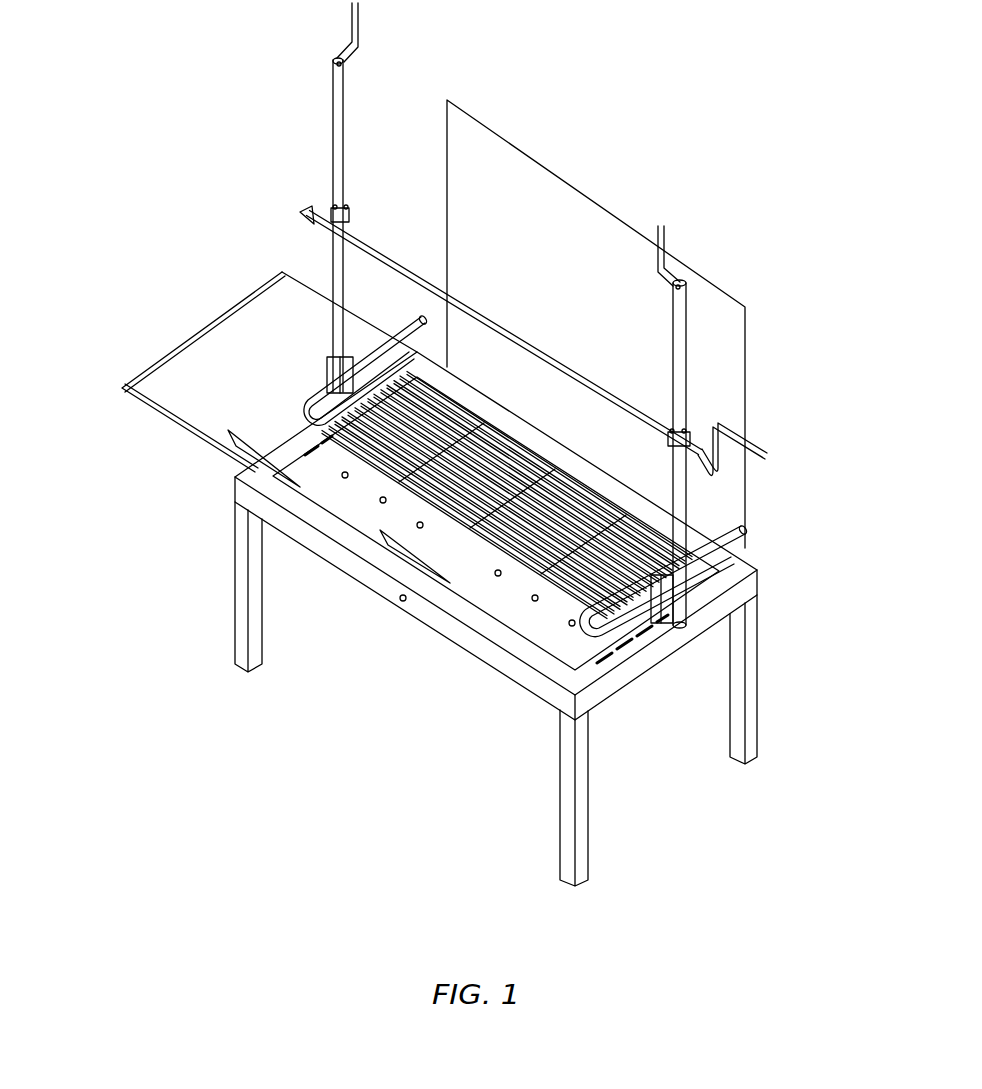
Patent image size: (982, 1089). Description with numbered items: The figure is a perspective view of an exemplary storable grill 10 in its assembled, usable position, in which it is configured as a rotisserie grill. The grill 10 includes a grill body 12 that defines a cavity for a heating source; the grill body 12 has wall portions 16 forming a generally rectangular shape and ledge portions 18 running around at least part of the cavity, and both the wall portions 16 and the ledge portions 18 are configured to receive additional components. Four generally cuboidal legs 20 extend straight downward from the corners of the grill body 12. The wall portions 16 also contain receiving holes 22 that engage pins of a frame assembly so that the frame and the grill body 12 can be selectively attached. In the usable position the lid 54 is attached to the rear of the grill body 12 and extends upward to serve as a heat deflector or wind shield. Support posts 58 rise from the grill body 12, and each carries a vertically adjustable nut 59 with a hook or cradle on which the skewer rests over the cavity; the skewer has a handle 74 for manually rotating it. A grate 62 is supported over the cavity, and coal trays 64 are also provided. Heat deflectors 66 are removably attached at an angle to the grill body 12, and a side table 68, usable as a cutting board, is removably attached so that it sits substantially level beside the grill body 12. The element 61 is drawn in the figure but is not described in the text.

The storable grill 10 is at (634, 141).
The grill body 12 is at (665, 816).
The wall portions 16 is at (500, 667).
The ledge portions 18 is at (740, 567).
The legs 20 is at (237, 575).
The receiving holes 22 is at (399, 601).
The lid 54 is at (492, 150).
The support posts 58 is at (333, 125).
The nut 59 is at (347, 210).
The handle 61 is at (357, 50).
The grate 62 is at (322, 228).
The coal trays 64 is at (320, 467).
The heat deflectors 66 is at (313, 470).
The side table 68 is at (190, 407).
The handle 74 is at (755, 455).